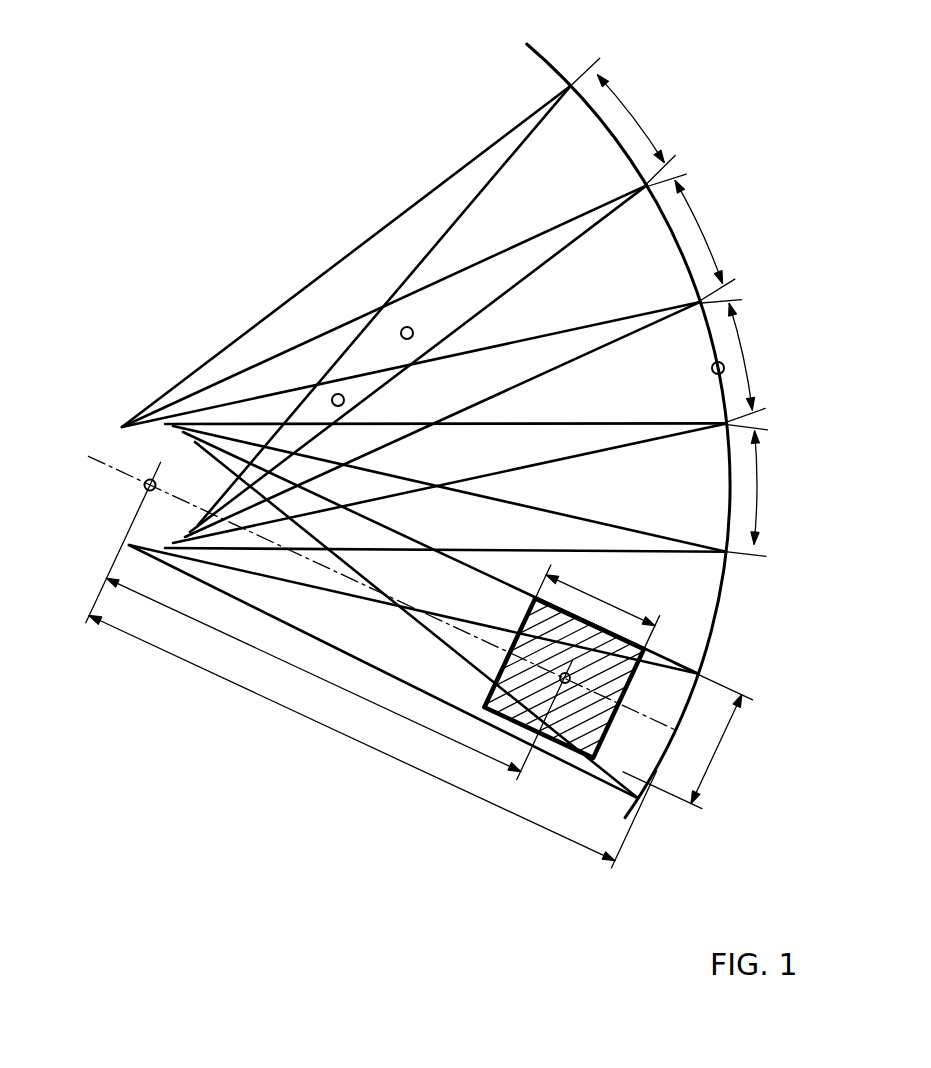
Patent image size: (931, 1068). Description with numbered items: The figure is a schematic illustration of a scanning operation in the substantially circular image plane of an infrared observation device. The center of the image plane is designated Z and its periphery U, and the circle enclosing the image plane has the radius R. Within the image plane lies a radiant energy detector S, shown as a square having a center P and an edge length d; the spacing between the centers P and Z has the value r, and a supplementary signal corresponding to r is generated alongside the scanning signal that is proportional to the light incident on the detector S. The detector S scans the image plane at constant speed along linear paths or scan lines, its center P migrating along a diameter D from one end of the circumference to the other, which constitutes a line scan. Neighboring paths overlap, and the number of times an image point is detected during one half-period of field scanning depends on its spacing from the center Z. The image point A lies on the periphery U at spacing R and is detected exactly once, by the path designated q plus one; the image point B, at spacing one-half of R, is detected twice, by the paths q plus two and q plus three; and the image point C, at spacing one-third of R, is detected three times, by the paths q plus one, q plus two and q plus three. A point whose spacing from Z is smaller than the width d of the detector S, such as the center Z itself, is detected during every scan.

The periphery of the image plane U is at (543, 53).
The image point A is at (723, 372).
The image point B is at (406, 327).
The image point C is at (337, 393).
The diameter of the image plane D is at (88, 458).
The center of the image plane Z is at (144, 488).
The center of the radiation detector P is at (565, 684).
The radiation detector S is at (583, 737).
The spacing between centers P and Z r is at (314, 674).
The radius of the image plane R is at (373, 742).
The edge length of the radiation detector d is at (644, 687).
The scan path q is at (751, 490).